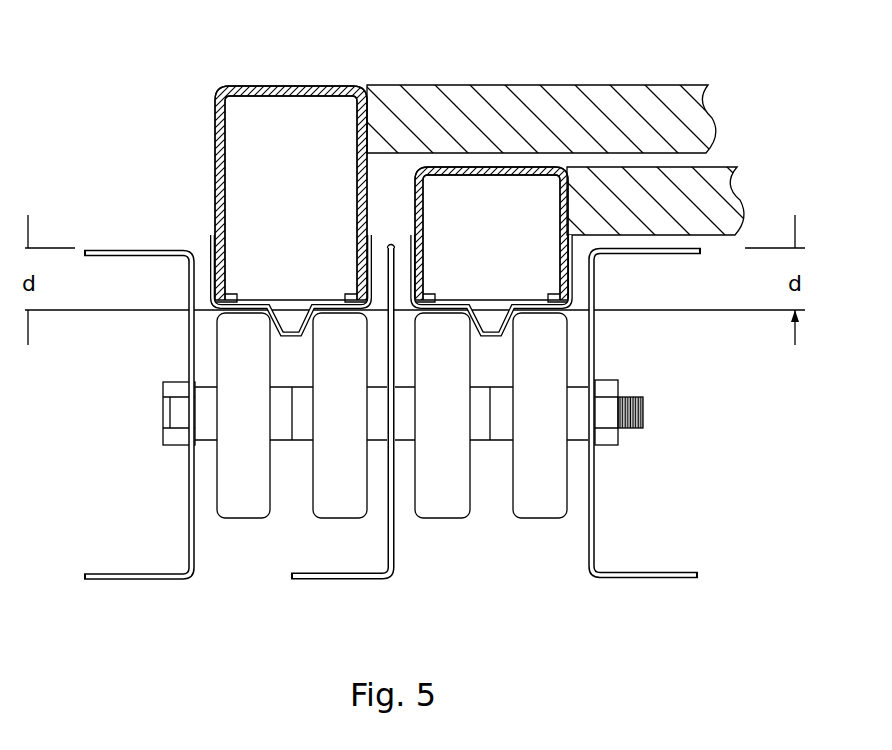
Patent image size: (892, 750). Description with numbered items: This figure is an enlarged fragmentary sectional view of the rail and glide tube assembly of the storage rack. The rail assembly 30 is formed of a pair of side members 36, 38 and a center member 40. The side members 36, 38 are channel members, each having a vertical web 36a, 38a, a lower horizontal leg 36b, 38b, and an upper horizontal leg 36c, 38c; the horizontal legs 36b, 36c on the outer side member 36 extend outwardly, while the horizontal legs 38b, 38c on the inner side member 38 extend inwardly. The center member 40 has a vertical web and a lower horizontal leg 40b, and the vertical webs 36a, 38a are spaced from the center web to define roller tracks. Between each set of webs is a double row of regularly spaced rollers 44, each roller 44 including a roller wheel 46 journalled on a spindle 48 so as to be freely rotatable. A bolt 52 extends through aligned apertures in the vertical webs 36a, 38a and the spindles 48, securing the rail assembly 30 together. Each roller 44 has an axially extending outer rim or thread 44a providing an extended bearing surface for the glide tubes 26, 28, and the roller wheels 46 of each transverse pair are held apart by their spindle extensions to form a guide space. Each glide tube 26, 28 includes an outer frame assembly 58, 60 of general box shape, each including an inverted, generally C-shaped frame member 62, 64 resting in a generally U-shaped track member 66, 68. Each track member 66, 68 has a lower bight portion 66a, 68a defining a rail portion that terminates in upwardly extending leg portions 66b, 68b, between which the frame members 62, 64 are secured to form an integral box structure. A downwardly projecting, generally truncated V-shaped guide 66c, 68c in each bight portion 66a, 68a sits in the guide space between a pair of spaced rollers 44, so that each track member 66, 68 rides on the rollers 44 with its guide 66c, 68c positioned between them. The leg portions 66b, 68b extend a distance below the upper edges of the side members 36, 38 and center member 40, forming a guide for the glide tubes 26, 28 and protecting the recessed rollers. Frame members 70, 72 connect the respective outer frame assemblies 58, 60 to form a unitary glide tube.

The glide tube 26 is at (567, 83).
The glide tube 28 is at (627, 153).
The rail assembly 30 is at (155, 250).
The outer side member 36 is at (134, 437).
The vertical web of outer side member 36a is at (187, 515).
The lower horizontal leg of outer side member 36b is at (155, 582).
The upper horizontal leg of outer side member 36c is at (145, 255).
The inner side member 38 is at (661, 438).
The vertical web of inner side member 38a is at (597, 493).
The lower horizontal leg of inner side member 38b is at (635, 578).
The upper horizontal leg of inner side member 38c is at (650, 255).
The center member 40 is at (358, 438).
The lower horizontal leg of center member 40b is at (316, 571).
The roller 44 is at (392, 454).
The outer rim or thread of roller 44a is at (247, 520).
The roller wheel 46 is at (250, 457).
The spindle 48 is at (301, 400).
The bolt 52 is at (632, 397).
The outer frame assembly 58 is at (291, 161).
The outer frame assembly 60 is at (491, 161).
The frame member 62 is at (308, 100).
The frame member 64 is at (512, 178).
The track member 66 is at (291, 263).
The bight portion 66a is at (253, 300).
The leg portions 66b is at (355, 253).
The guide 66c is at (292, 320).
The track member 68 is at (492, 268).
The bight portion 68a is at (470, 303).
The leg portions 68b is at (558, 262).
The guide 68c is at (490, 330).
The frame member 70 is at (683, 120).
The frame member 72 is at (710, 207).